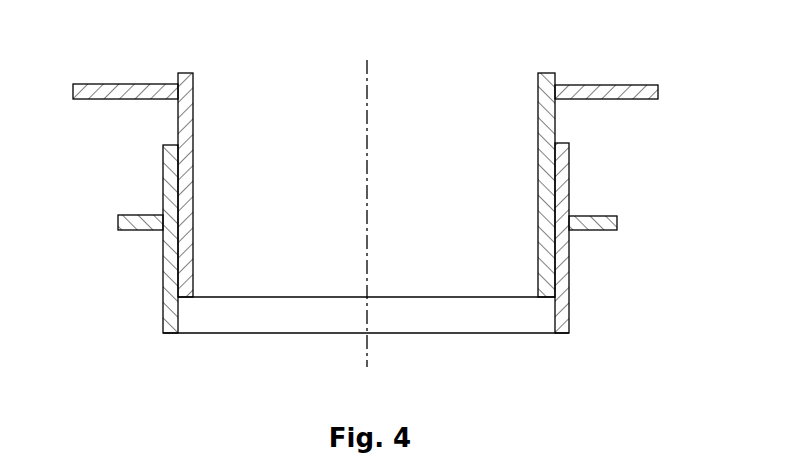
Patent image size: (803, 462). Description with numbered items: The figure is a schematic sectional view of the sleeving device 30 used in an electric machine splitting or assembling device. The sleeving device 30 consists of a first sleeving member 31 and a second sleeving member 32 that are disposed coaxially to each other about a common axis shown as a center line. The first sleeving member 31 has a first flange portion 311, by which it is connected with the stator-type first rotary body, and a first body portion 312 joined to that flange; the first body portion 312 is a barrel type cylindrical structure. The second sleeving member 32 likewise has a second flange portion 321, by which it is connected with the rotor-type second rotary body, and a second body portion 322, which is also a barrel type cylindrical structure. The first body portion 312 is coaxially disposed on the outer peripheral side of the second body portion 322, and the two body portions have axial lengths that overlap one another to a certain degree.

The sleeving device 30 is at (375, 41).
The first sleeving member 31 is at (373, 238).
The second sleeving member 32 is at (365, 168).
The first flange portion 311 is at (600, 222).
The first body portion 312 is at (170, 286).
The second flange portion 321 is at (152, 92).
The second body portion 322 is at (186, 196).